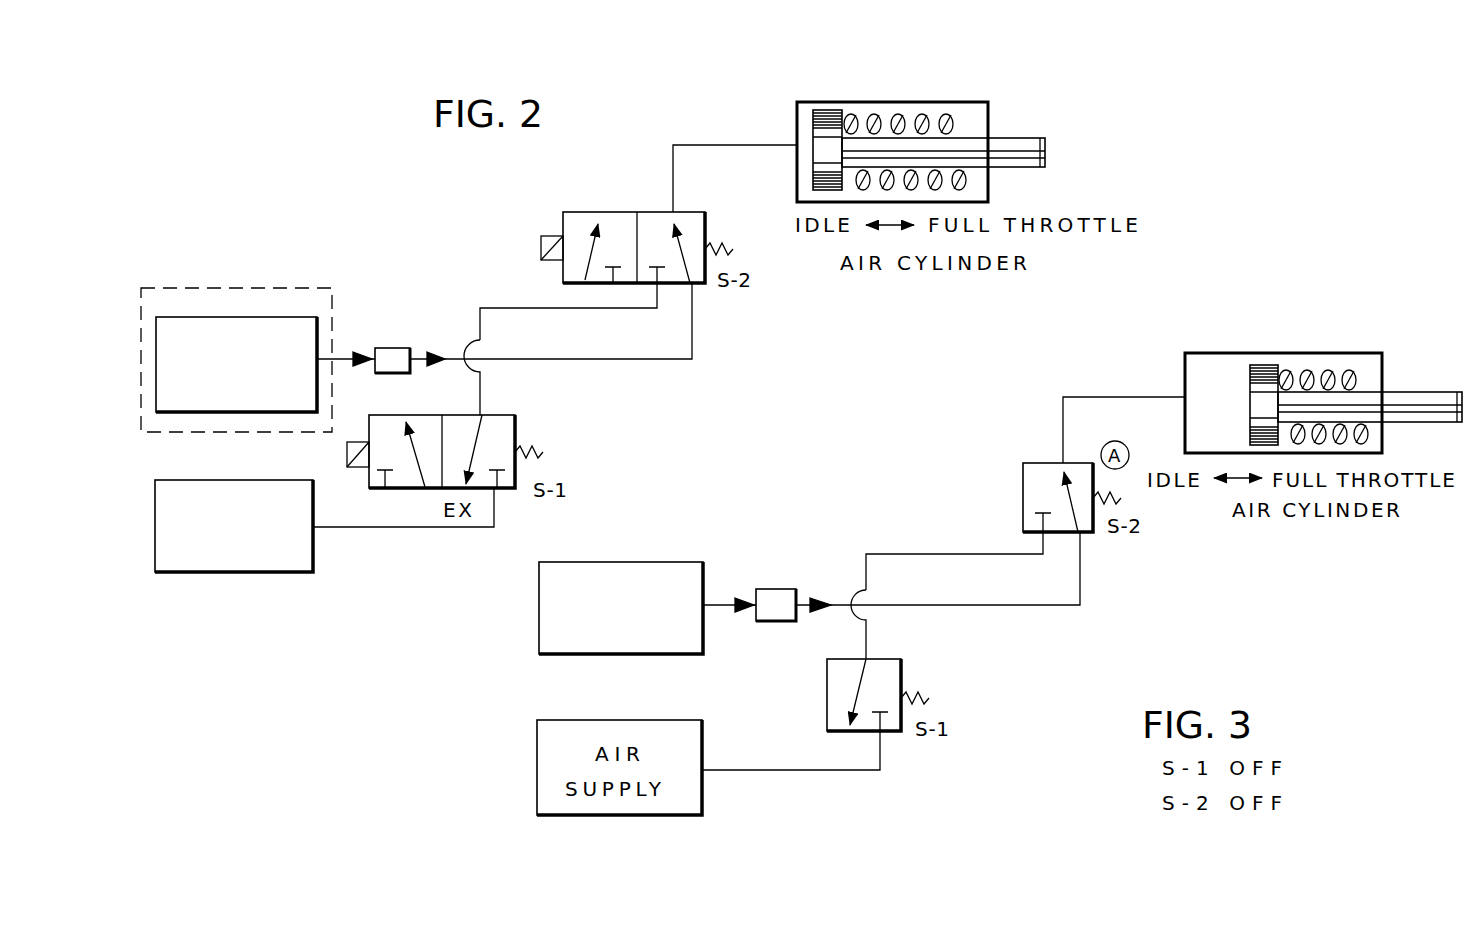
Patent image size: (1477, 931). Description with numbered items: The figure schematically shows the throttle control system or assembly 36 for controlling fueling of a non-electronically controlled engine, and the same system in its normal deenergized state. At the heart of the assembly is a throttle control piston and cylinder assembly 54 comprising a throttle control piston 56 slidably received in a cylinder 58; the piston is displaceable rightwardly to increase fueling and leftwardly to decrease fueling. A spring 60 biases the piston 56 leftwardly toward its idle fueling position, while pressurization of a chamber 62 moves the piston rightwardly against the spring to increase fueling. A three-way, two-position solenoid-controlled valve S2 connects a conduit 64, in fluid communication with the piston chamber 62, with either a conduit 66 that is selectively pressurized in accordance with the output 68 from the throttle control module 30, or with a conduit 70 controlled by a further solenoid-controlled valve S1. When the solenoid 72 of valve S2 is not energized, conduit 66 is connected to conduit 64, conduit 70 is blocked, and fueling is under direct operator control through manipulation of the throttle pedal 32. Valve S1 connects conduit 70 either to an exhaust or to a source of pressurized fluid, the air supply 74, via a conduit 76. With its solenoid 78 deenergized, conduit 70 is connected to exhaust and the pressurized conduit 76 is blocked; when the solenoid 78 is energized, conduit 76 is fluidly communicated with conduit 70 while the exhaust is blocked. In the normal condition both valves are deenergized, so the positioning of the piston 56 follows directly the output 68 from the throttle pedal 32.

In FIG. 2, the throttle control module 30 is at (227, 392).
In FIG. 2, the throttle pedal 32 is at (242, 398).
In FIG. 2, the throttle control system 36 is at (306, 265).
In FIG. 3, the throttle control system 36 is at (875, 518).
In FIG. 2, the throttle control piston and cylinder assembly 54 is at (1012, 96).
In FIG. 2, the throttle control piston 56 is at (1043, 140).
In FIG. 3, the throttle control piston 56 is at (1412, 392).
In FIG. 2, the cylinder 58 is at (868, 103).
In FIG. 2, the spring 60 is at (940, 118).
In FIG. 2, the chamber 62 is at (806, 122).
In FIG. 2, the conduit 64 is at (697, 145).
In FIG. 3, the conduit 64 is at (1106, 397).
In FIG. 2, the conduit 66 is at (560, 360).
In FIG. 3, the conduit 66 is at (940, 606).
In FIG. 2, the output 68 is at (400, 348).
In FIG. 3, the output 68 is at (780, 589).
In FIG. 2, the conduit 70 is at (566, 308).
In FIG. 3, the conduit 70 is at (945, 554).
In FIG. 2, the solenoid 72 is at (542, 233).
In FIG. 2, the air supply 74 is at (226, 574).
In FIG. 2, the conduit 76 is at (404, 528).
In FIG. 3, the conduit 76 is at (782, 771).
In FIG. 2, the solenoid 78 is at (347, 450).